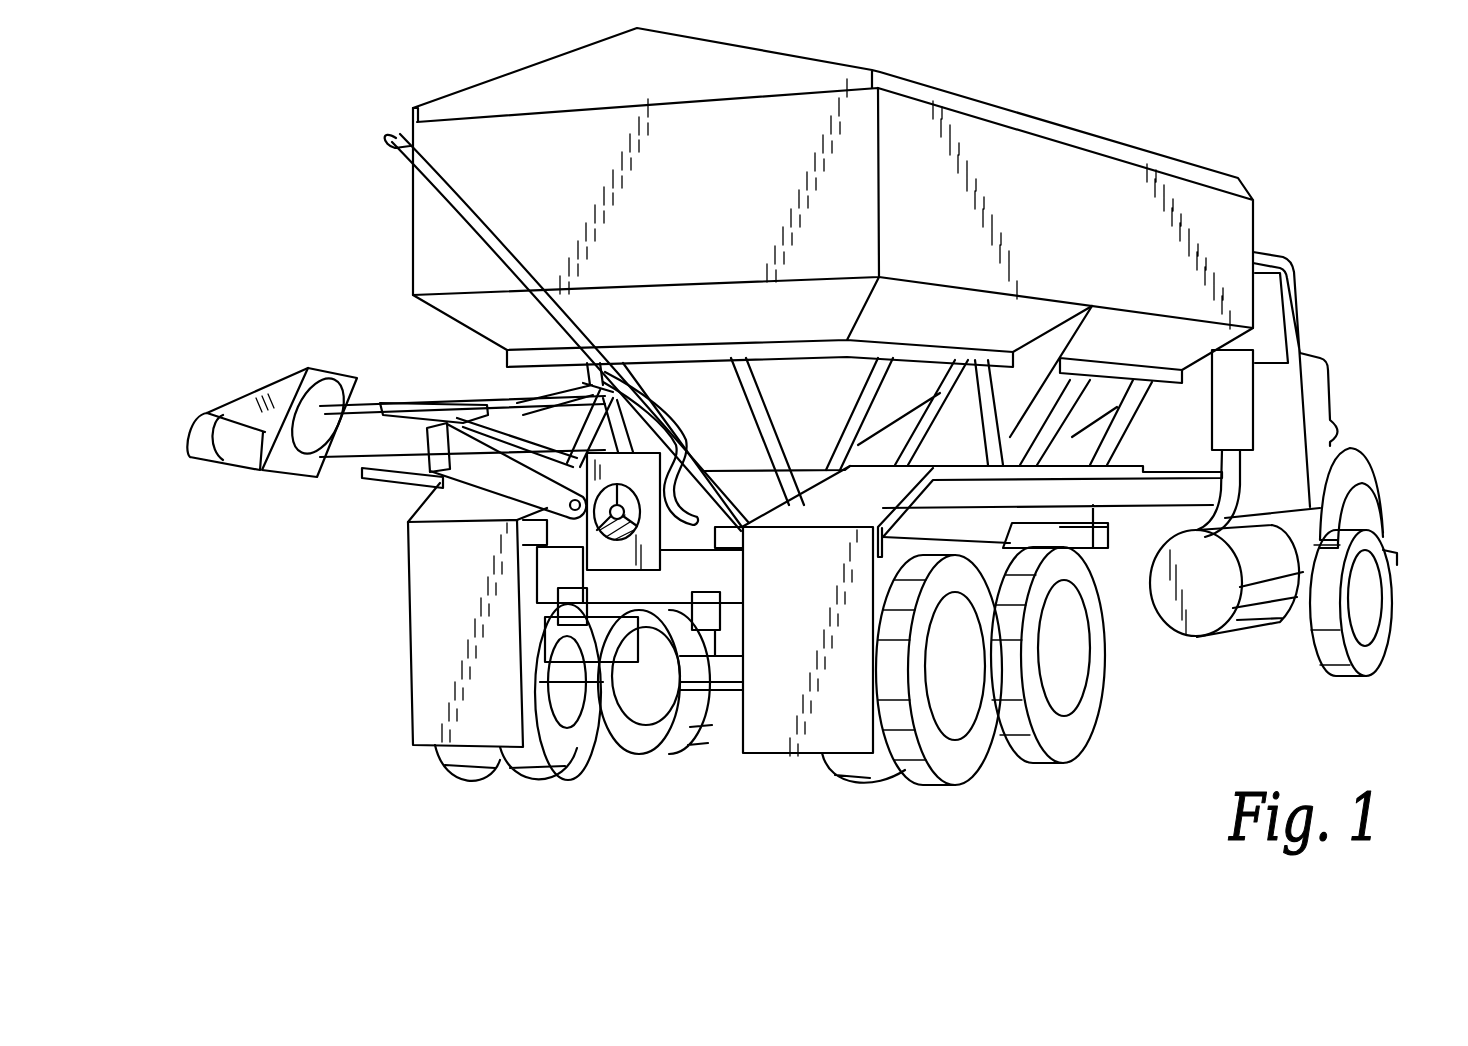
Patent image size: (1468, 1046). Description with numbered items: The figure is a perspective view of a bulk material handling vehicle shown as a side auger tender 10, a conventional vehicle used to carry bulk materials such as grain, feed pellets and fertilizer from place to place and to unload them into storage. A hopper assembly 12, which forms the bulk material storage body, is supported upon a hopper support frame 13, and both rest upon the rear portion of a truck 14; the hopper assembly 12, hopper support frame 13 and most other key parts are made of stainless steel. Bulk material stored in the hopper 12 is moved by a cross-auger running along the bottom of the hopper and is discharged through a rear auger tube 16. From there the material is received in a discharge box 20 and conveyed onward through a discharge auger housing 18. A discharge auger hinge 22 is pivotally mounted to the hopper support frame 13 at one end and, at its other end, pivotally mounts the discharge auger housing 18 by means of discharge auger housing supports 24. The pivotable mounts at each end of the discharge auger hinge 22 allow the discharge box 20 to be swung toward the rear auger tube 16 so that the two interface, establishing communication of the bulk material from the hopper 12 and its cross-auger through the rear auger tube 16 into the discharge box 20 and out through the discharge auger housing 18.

The side auger tender 10 is at (447, 343).
The hopper assembly 12 is at (1053, 162).
The hopper support frame 13 is at (1077, 475).
The truck 14 is at (1315, 410).
The rear auger tube 16 is at (620, 555).
The discharge auger housing 18 is at (343, 447).
The discharge box 20 is at (285, 395).
The discharge auger hinge 22 is at (472, 458).
The discharge auger housing supports 24 is at (402, 468).